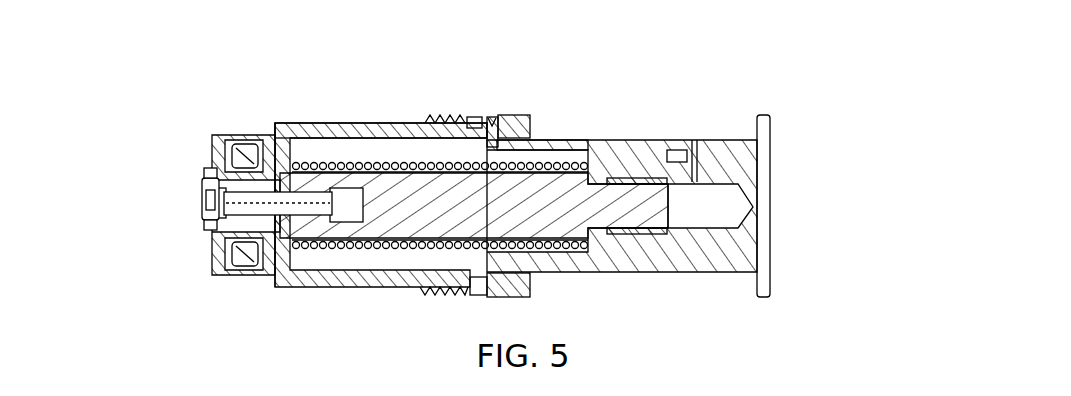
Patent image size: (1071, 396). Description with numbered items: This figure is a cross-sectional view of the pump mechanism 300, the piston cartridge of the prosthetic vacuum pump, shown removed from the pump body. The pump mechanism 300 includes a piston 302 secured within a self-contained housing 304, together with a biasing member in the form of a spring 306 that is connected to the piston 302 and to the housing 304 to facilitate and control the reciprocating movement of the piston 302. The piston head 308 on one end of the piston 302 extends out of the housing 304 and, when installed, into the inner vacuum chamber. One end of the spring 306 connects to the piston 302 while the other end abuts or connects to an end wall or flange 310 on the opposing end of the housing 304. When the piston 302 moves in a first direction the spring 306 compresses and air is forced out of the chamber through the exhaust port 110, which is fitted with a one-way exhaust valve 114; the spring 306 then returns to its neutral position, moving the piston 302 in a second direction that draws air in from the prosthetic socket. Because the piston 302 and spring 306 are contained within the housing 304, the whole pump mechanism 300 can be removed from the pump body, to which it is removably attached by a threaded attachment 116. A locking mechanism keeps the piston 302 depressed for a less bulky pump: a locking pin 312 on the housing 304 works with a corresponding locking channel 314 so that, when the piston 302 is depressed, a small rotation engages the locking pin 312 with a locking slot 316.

The pump mechanism 300 is at (480, 187).
The exhaust port 110 is at (203, 208).
The exhaust valve 114 is at (210, 226).
The threaded attachment 116 is at (446, 115).
The piston 302 is at (648, 256).
The housing 304 is at (333, 282).
The spring 306 is at (382, 246).
The piston head 308 is at (228, 156).
The flange 310 is at (313, 125).
The locking pin 312 is at (497, 117).
The locking channel 314 is at (586, 148).
The locking slot 316 is at (680, 150).